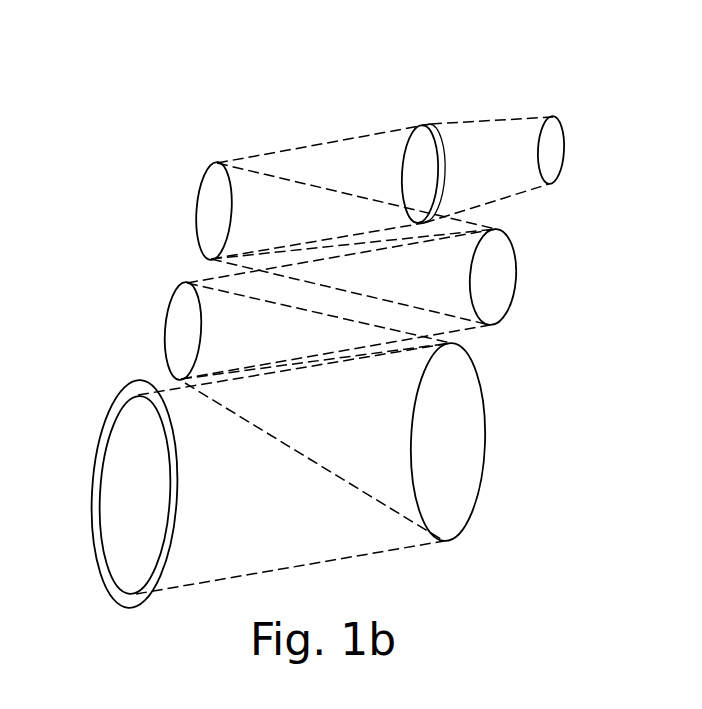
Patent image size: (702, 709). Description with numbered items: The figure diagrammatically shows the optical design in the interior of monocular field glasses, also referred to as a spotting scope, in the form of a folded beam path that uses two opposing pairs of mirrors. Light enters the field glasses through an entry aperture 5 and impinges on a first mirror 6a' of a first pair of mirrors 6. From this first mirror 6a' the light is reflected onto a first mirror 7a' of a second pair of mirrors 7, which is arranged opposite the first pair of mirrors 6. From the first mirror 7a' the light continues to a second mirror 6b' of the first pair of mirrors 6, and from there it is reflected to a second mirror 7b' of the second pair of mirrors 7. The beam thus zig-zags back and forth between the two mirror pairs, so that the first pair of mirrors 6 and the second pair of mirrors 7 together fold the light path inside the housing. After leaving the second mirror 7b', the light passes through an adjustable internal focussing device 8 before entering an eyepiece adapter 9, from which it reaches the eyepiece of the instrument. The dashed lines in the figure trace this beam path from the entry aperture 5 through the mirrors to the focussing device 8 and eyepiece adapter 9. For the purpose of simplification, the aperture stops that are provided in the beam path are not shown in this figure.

The entry aperture 5 is at (126, 392).
The first pair of mirrors 6 is at (493, 406).
The first mirror of the first pair of mirrors 6a' is at (468, 464).
The second mirror of the first pair of mirrors 6b' is at (503, 306).
The second pair of mirrors 7 is at (171, 237).
The first mirror of the second pair of mirrors 7a' is at (173, 302).
The second mirror of the second pair of mirrors 7b' is at (209, 177).
The adjustable internal focussing device 8 is at (443, 128).
The eyepiece adapter 9 is at (553, 132).